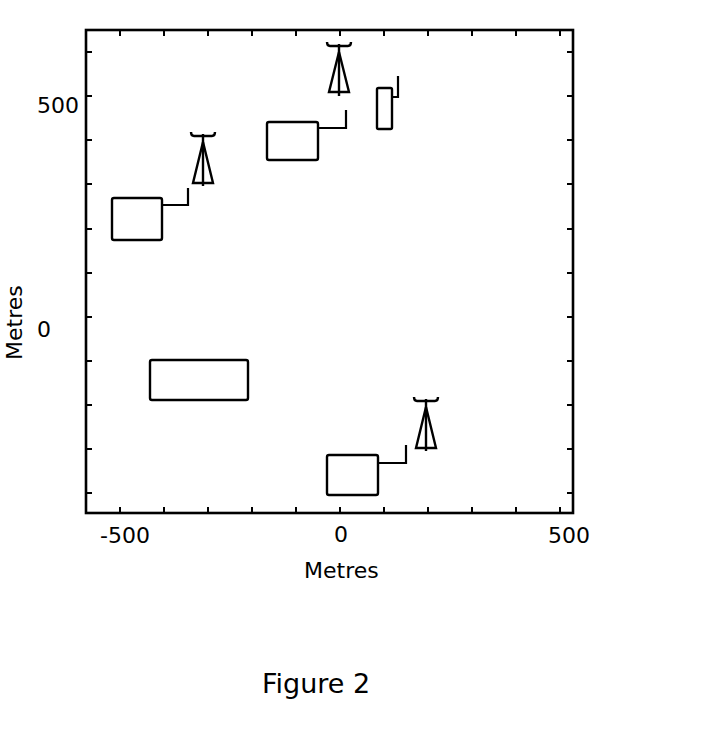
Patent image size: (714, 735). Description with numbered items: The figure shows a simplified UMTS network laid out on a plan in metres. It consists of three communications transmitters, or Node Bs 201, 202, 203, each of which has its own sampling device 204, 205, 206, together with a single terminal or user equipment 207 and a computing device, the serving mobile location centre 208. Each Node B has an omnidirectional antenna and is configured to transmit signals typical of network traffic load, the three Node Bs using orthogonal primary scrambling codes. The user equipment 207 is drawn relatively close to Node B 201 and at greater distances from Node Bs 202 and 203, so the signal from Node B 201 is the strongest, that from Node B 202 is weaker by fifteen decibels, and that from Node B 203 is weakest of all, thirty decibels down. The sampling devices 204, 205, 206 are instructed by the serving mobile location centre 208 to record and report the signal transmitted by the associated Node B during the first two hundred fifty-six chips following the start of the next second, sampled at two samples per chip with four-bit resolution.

The communications transmitter (Node B) 201 is at (327, 63).
The communications transmitter (Node B) 202 is at (223, 173).
The communications transmitter (Node B) 203 is at (443, 408).
The sampling device 204 is at (306, 135).
The sampling device 205 is at (150, 214).
The sampling device 206 is at (366, 470).
The terminal (user equipment, UE) 207 is at (402, 100).
The computing device (serving mobile location centre, SMLC) 208 is at (199, 380).